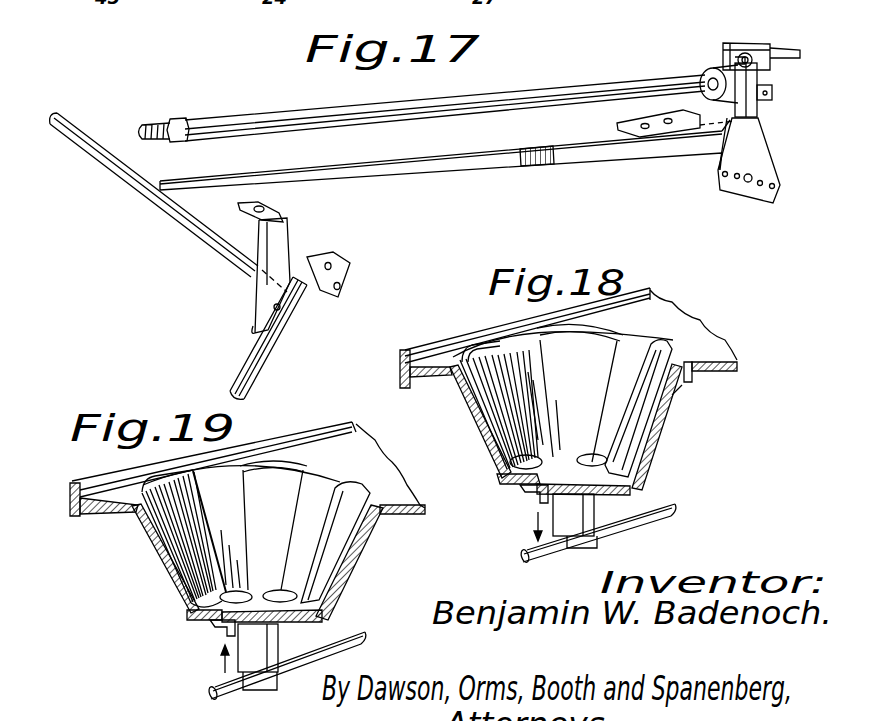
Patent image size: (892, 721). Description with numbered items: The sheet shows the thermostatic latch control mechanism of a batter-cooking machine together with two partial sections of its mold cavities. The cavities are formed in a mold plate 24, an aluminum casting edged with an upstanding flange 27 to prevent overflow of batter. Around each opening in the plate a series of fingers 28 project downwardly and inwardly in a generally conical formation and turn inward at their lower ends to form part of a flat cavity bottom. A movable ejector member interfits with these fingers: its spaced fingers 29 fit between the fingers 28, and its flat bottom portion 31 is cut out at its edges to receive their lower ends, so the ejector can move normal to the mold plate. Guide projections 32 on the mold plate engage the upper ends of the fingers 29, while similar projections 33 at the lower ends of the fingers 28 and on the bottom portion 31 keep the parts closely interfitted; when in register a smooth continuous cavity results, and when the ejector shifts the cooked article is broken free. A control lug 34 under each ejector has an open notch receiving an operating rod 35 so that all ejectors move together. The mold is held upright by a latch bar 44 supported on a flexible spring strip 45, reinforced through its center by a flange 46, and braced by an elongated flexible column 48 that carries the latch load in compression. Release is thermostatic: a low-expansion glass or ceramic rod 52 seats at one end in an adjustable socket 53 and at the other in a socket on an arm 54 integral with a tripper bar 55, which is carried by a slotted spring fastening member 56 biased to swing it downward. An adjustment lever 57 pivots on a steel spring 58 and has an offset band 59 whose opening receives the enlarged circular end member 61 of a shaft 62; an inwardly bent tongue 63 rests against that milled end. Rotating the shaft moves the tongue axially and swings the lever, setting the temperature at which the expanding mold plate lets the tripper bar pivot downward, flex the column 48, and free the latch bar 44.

In FIG. 18, the mold plate 24 is at (690, 328).
In FIG. 19, the mold plate 24 is at (364, 454).
In FIG. 18, the upstanding flange 27 is at (492, 330).
In FIG. 19, the upstanding flange 27 is at (306, 436).
In FIG. 18, the fingers 28 is at (625, 370).
In FIG. 19, the fingers 28 is at (305, 499).
In FIG. 18, the spaced fingers 29 is at (650, 417).
In FIG. 19, the spaced fingers 29 is at (340, 543).
In FIG. 18, the flat bottom portion 31 is at (618, 497).
In FIG. 19, the flat bottom portion 31 is at (320, 607).
In FIG. 18, the guide projections 32 is at (694, 380).
In FIG. 18, the projections 33 is at (528, 490).
In FIG. 19, the projections 33 is at (214, 627).
In FIG. 18, the control lug 34 is at (576, 511).
In FIG. 19, the control lug 34 is at (262, 635).
In FIG. 18, the operating rod 35 is at (622, 528).
In FIG. 19, the operating rod 35 is at (212, 696).
In FIG. 17, the latch bar 44 is at (280, 338).
In FIG. 17, the flexible spring strip 45 is at (275, 239).
In FIG. 17, the flange 46 is at (258, 258).
In FIG. 17, the flexible column 48 is at (200, 230).
In FIG. 17, the rod 52 is at (426, 112).
In FIG. 17, the socket 53 is at (176, 118).
In FIG. 17, the arm 54 is at (745, 100).
In FIG. 17, the tripper bar 55 is at (477, 160).
In FIG. 17, the spring fastening member 56 is at (758, 155).
In FIG. 17, the adjustment lever 57 is at (745, 112).
In FIG. 17, the steel spring 58 is at (775, 90).
In FIG. 17, the offset band 59 is at (753, 44).
In FIG. 17, the circular end member 61 is at (735, 60).
In FIG. 17, the shaft 62 is at (797, 50).
In FIG. 17, the tongue 63 is at (740, 57).